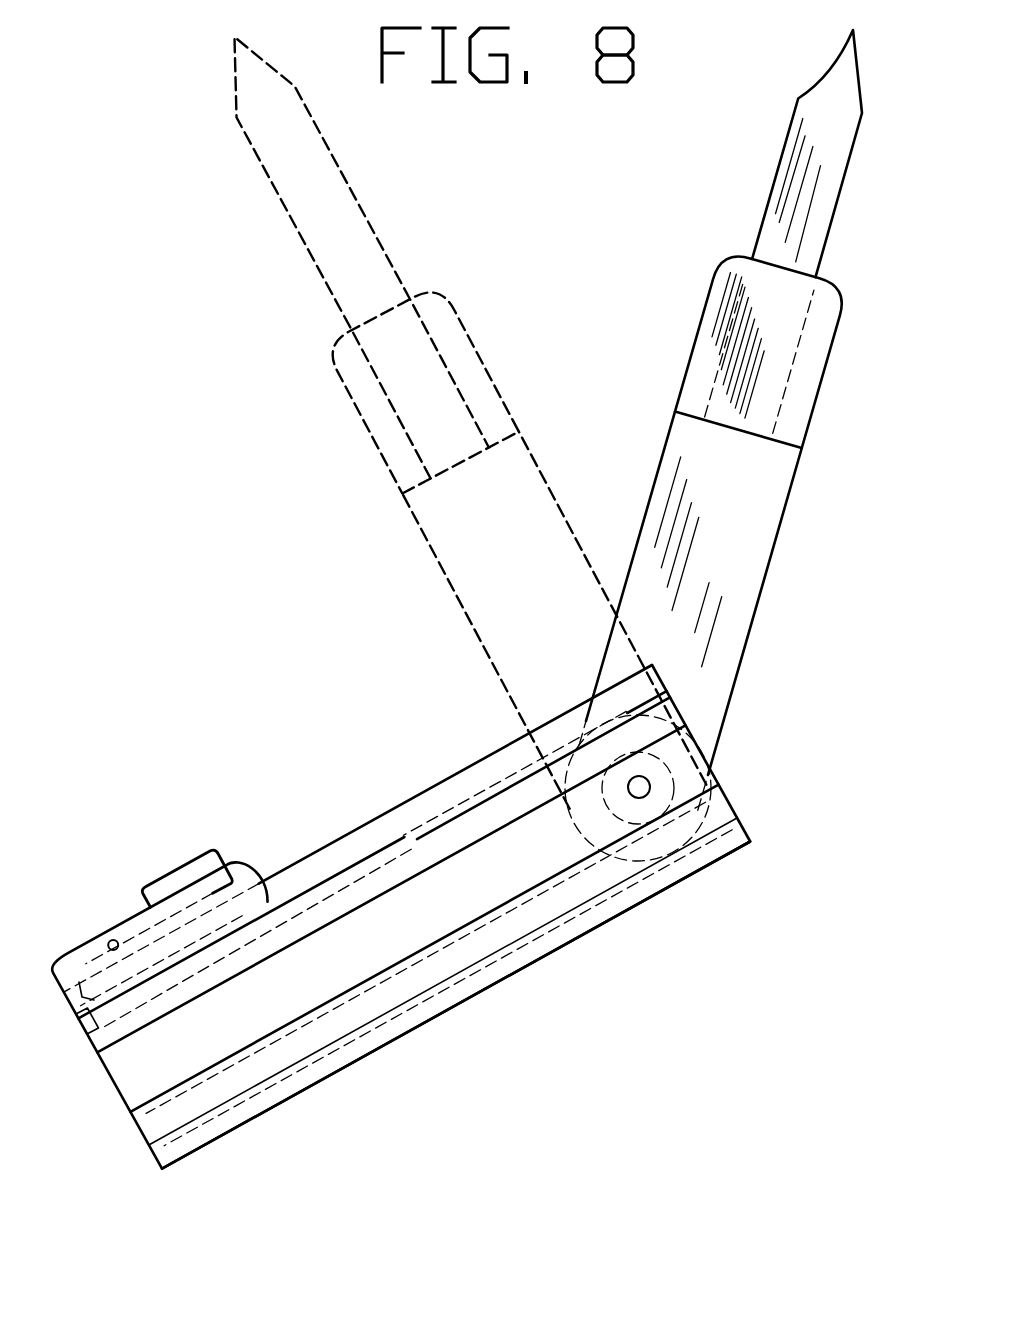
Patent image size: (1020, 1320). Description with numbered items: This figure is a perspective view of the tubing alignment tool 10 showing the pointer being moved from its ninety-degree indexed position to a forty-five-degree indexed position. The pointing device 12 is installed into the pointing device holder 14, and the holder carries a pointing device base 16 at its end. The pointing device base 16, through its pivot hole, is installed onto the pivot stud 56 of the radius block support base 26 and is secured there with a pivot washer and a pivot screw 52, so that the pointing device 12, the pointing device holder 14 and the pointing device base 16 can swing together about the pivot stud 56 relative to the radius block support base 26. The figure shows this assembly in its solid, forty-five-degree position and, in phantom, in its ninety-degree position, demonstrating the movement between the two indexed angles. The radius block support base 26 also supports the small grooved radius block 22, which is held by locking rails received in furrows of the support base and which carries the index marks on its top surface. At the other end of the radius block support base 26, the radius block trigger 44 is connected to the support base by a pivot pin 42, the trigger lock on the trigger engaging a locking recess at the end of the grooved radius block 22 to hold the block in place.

The tubing alignment tool 10 is at (462, 770).
The pointing device 12 is at (793, 117).
The pointing device holder 14 is at (703, 312).
The pointing device base 16 is at (725, 552).
The grooved radius block 22 is at (733, 799).
The radius block support base 26 is at (345, 1067).
The pivot pin 42 is at (108, 943).
The radius block trigger 44 is at (150, 889).
The pivot screw 52 is at (640, 800).
The pivot stud 56 is at (600, 812).